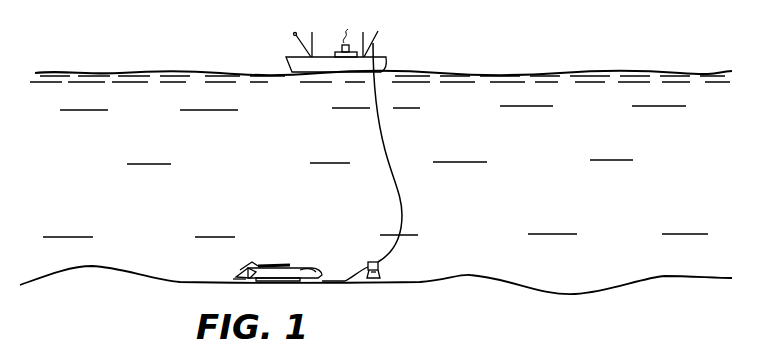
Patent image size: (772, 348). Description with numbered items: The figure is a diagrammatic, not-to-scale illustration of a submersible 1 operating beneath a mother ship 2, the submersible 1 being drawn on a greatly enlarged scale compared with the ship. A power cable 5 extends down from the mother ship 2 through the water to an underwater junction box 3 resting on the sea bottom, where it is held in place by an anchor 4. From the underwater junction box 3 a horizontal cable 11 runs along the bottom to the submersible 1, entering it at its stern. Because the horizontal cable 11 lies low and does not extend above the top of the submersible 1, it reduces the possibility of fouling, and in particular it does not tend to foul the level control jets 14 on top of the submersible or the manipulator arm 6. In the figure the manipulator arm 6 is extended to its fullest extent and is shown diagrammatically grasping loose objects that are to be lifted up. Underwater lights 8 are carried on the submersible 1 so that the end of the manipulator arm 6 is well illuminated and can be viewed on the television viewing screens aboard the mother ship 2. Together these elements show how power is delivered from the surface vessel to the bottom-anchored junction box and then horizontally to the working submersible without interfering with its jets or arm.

The submersible 1 is at (304, 268).
The mother ship 2 is at (381, 62).
The underwater junction box 3 is at (379, 266).
The anchor 4 is at (374, 280).
The power cable 5 is at (403, 208).
The manipulator arm 6 is at (249, 266).
The underwater lights 8 is at (276, 270).
The horizontal cable 11 is at (365, 267).
The level control jets 14 is at (292, 263).